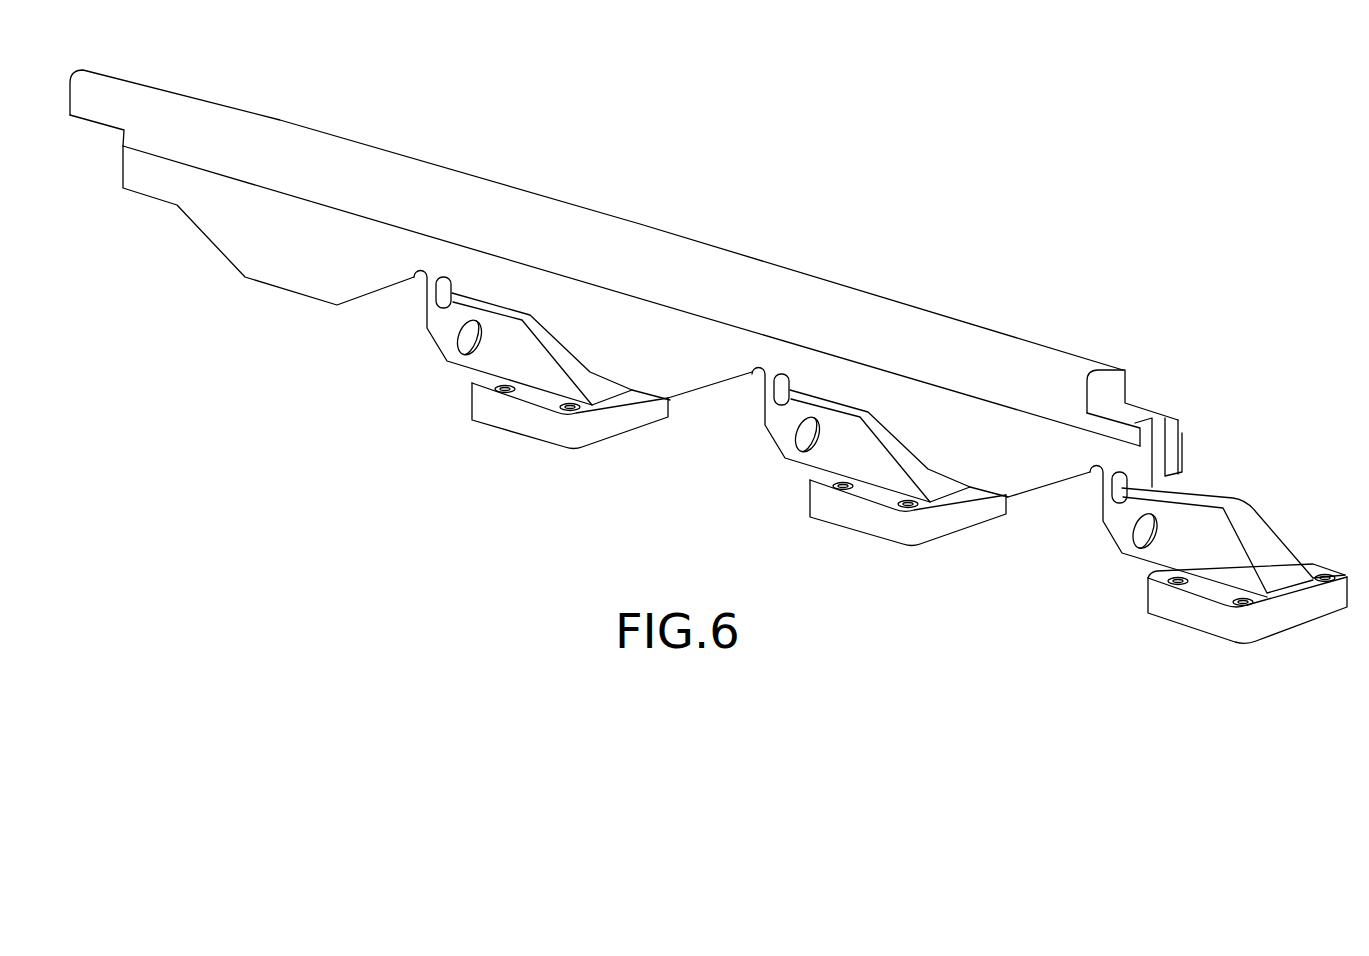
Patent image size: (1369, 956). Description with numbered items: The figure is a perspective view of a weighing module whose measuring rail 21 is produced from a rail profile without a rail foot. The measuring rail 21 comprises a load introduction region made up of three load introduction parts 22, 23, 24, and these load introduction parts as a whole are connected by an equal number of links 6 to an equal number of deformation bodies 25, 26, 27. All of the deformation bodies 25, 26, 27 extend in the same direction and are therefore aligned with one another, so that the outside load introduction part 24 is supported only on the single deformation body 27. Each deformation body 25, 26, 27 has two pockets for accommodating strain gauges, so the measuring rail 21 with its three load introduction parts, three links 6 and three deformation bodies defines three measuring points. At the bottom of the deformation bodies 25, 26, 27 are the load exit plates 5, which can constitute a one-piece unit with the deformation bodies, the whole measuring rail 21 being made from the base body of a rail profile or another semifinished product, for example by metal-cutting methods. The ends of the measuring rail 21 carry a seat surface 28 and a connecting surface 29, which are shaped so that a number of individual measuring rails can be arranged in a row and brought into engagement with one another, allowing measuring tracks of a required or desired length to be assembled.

The measuring rail 21 is at (632, 324).
The deformation body 26 is at (877, 328).
The connecting surface 29 is at (100, 124).
The load introduction part 24 is at (293, 268).
The load introduction part 23 is at (663, 362).
The load introduction part 22 is at (1010, 462).
The seat surface 28 is at (1152, 417).
The deformation body 27 is at (512, 352).
The deformation body 25 is at (1195, 547).
The link 6 is at (437, 293).
The load exit plate 5 is at (526, 418).